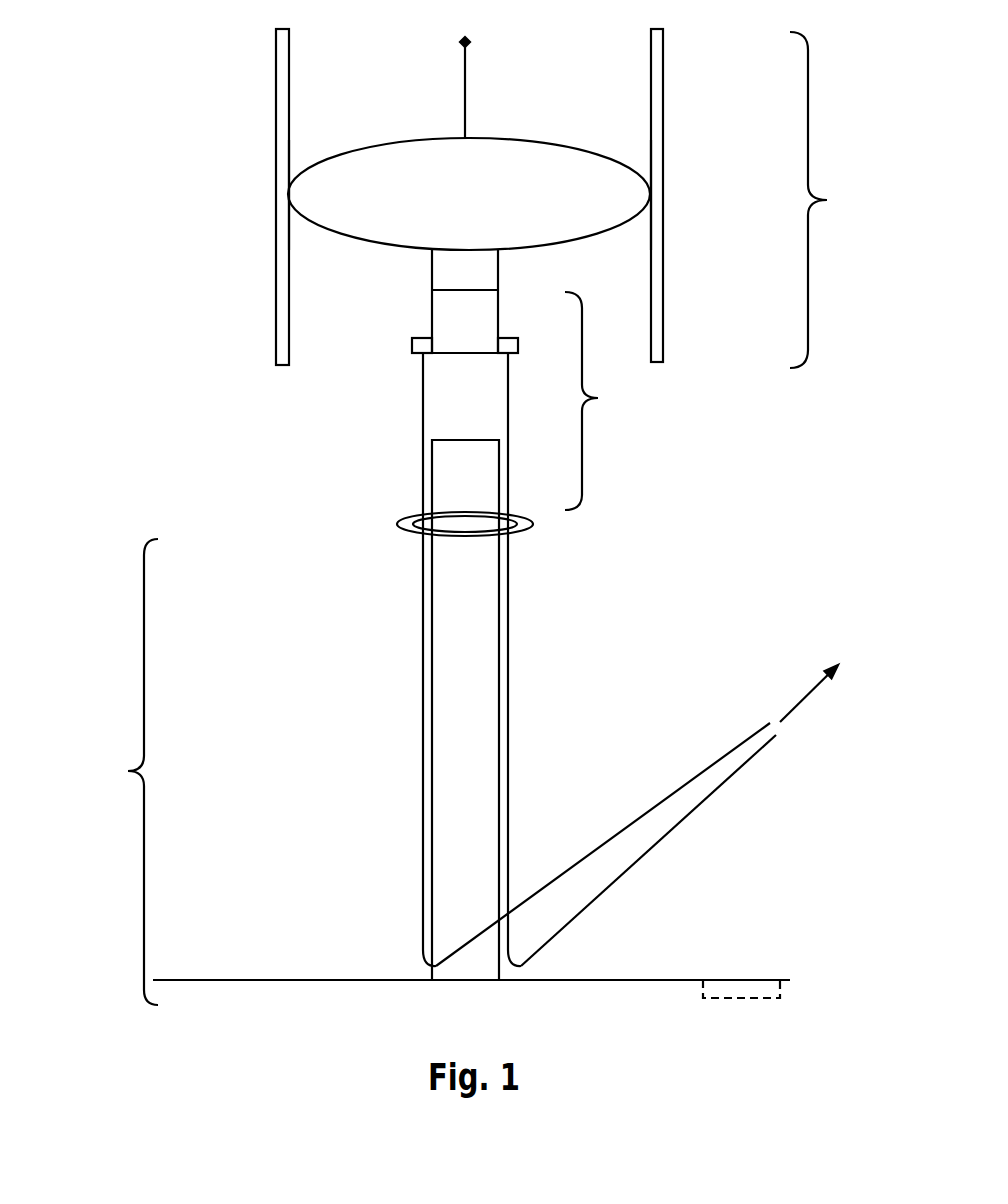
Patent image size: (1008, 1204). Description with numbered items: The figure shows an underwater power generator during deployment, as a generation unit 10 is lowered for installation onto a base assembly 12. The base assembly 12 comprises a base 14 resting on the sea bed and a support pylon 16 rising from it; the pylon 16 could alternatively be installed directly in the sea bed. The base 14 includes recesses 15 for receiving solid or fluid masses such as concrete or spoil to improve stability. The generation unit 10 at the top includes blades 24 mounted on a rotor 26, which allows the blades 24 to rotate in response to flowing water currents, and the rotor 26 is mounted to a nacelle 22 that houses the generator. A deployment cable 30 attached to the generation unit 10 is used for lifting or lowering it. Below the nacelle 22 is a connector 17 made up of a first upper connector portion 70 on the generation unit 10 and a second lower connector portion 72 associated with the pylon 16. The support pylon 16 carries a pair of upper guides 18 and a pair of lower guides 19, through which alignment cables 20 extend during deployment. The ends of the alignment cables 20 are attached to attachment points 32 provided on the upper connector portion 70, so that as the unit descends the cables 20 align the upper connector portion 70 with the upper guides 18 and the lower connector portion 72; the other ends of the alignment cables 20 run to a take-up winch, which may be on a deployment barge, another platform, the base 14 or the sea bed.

The generation unit 10 is at (829, 178).
The base assembly 12 is at (119, 752).
The base 14 is at (253, 991).
The recesses 15 is at (742, 978).
The pylon 16 is at (442, 711).
The connector 17 is at (618, 403).
The upper guides 18 is at (385, 519).
The lower guides 19 is at (510, 953).
The alignment cables 20 is at (409, 443).
The nacelle 22 is at (469, 194).
The blades 24 is at (264, 122).
The rotor 26 is at (261, 190).
The deployment cable 30 is at (449, 89).
The attachment points 32 is at (400, 333).
The first upper connector portion 70 is at (465, 301).
The second lower connector portion 72 is at (465, 482).